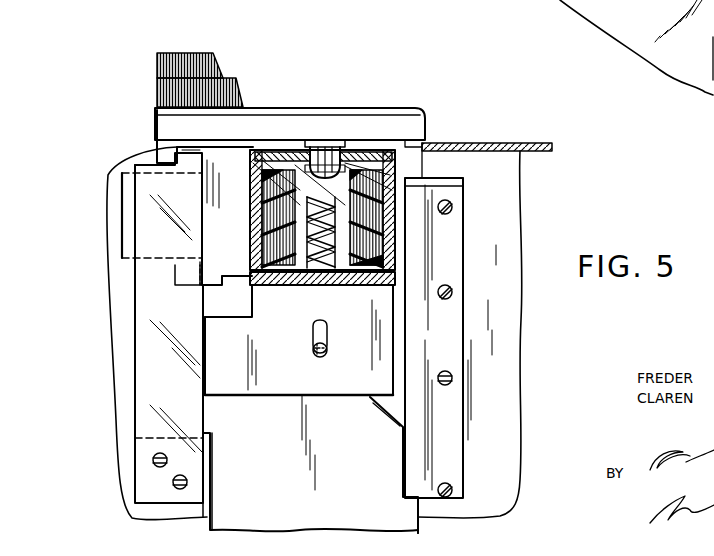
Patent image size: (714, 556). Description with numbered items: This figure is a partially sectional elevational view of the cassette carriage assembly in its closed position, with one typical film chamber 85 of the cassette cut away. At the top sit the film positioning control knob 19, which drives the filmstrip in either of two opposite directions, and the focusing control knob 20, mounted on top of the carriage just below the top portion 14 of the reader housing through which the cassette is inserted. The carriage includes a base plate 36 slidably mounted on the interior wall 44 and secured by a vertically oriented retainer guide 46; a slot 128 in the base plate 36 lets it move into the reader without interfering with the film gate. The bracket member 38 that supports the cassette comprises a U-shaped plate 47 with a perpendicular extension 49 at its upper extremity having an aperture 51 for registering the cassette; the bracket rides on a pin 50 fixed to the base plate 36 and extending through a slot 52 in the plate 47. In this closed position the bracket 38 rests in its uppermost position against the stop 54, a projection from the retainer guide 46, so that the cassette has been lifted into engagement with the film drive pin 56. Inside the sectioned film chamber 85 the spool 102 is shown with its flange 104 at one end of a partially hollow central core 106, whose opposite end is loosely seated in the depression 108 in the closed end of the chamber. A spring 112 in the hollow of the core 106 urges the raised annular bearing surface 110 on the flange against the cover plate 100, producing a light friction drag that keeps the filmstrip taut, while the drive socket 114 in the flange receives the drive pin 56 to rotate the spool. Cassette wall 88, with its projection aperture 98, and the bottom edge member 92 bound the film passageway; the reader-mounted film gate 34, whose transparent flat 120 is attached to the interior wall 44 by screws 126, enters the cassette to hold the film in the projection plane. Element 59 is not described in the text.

The top portion 14 is at (517, 145).
The film positioning control knob 19 is at (168, 94).
The focusing control knob 20 is at (182, 52).
The film gate 34 is at (131, 208).
The base plate 36 is at (297, 502).
The bracket member 38 is at (271, 399).
The interior wall 44 is at (500, 323).
The retainer guides 46 is at (447, 407).
The U-shaped plate 47 is at (332, 383).
The perpendicular extensions 49 is at (263, 288).
The pins 50 is at (328, 352).
The aperture 51 is at (287, 288).
The slots 52 is at (313, 340).
The stops 54 is at (377, 402).
The film drive pin 56 is at (327, 143).
The cover 59 is at (415, 122).
The film chamber 85 is at (405, 175).
The wall 88 is at (182, 156).
The bottom edge member 92 is at (235, 272).
The projection aperture 98 is at (190, 263).
The cover plate 100 is at (377, 153).
The spool 102 is at (363, 150).
The flange 104 is at (427, 128).
The central core 106 is at (390, 240).
The depression 108 is at (307, 284).
The annular bearing surface 110 is at (280, 152).
The spring 112 is at (333, 285).
The drive socket 114 is at (353, 150).
The flat 120 is at (143, 322).
The screws 126 is at (180, 484).
The slot 128 is at (210, 477).